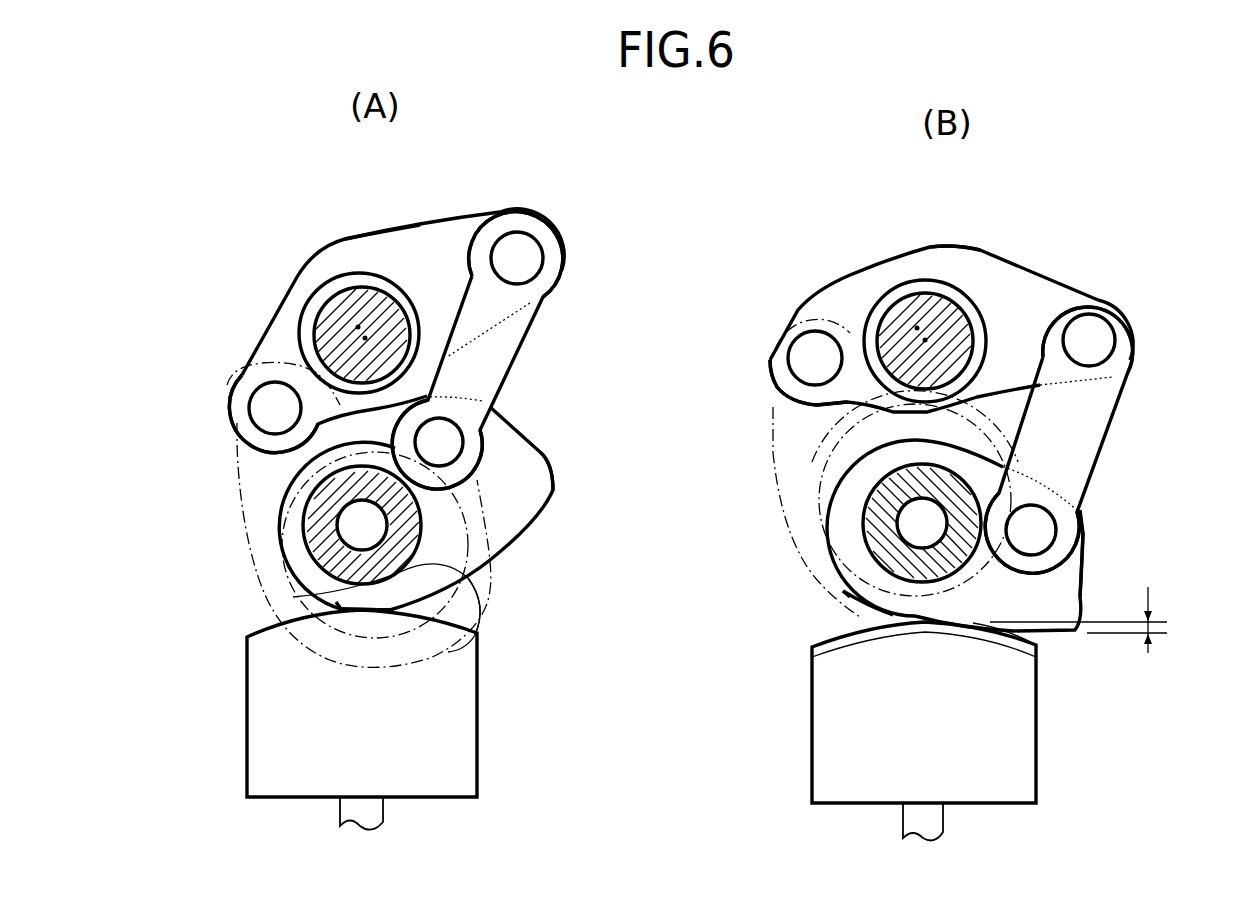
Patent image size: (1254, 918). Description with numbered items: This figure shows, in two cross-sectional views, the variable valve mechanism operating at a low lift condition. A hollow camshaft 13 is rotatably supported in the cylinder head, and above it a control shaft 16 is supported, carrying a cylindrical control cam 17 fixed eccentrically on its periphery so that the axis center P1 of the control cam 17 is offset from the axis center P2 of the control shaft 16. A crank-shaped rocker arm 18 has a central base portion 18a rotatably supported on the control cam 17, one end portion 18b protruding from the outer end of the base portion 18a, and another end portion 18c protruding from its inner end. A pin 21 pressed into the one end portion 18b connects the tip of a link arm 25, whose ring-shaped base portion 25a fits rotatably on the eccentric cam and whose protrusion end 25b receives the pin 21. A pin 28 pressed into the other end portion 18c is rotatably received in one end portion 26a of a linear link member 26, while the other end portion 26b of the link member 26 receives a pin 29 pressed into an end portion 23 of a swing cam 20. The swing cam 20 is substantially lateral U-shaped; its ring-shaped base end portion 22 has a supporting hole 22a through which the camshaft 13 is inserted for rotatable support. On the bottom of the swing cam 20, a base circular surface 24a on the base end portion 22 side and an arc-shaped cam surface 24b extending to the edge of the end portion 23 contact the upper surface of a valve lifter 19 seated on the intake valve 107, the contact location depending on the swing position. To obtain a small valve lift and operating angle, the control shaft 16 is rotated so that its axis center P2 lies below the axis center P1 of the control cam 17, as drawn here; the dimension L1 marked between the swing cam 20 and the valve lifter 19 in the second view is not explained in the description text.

The camshaft 13 is at (480, 575).
The control shaft 16 is at (320, 300).
The control cam 17 is at (337, 310).
The rocker arm 18 is at (396, 228).
The base portion 18a is at (350, 253).
The one end portion 18b is at (252, 346).
The other end portion 18c is at (477, 217).
The valve lifter 19 is at (262, 720).
The swing cam 20 is at (543, 452).
The pin 21 is at (272, 407).
The base end portion 22 is at (292, 550).
The supporting hole 22a is at (336, 602).
The end portion 23 is at (503, 460).
The base circular surface 24a is at (378, 612).
The cam surface 24b is at (483, 553).
The link arm 25 is at (233, 494).
The base portion 25a is at (478, 580).
The protrusion end 25b is at (228, 440).
The link member 26 is at (530, 325).
The one end portion 26a is at (530, 227).
The other end portion 26b is at (483, 484).
The pin 28 is at (517, 258).
The pin 29 is at (446, 430).
The intake valve 107 is at (372, 803).
The axis center of control cam P1 is at (357, 328).
The axis center of control shaft P2 is at (365, 338).
The gap L1 is at (1089, 626).